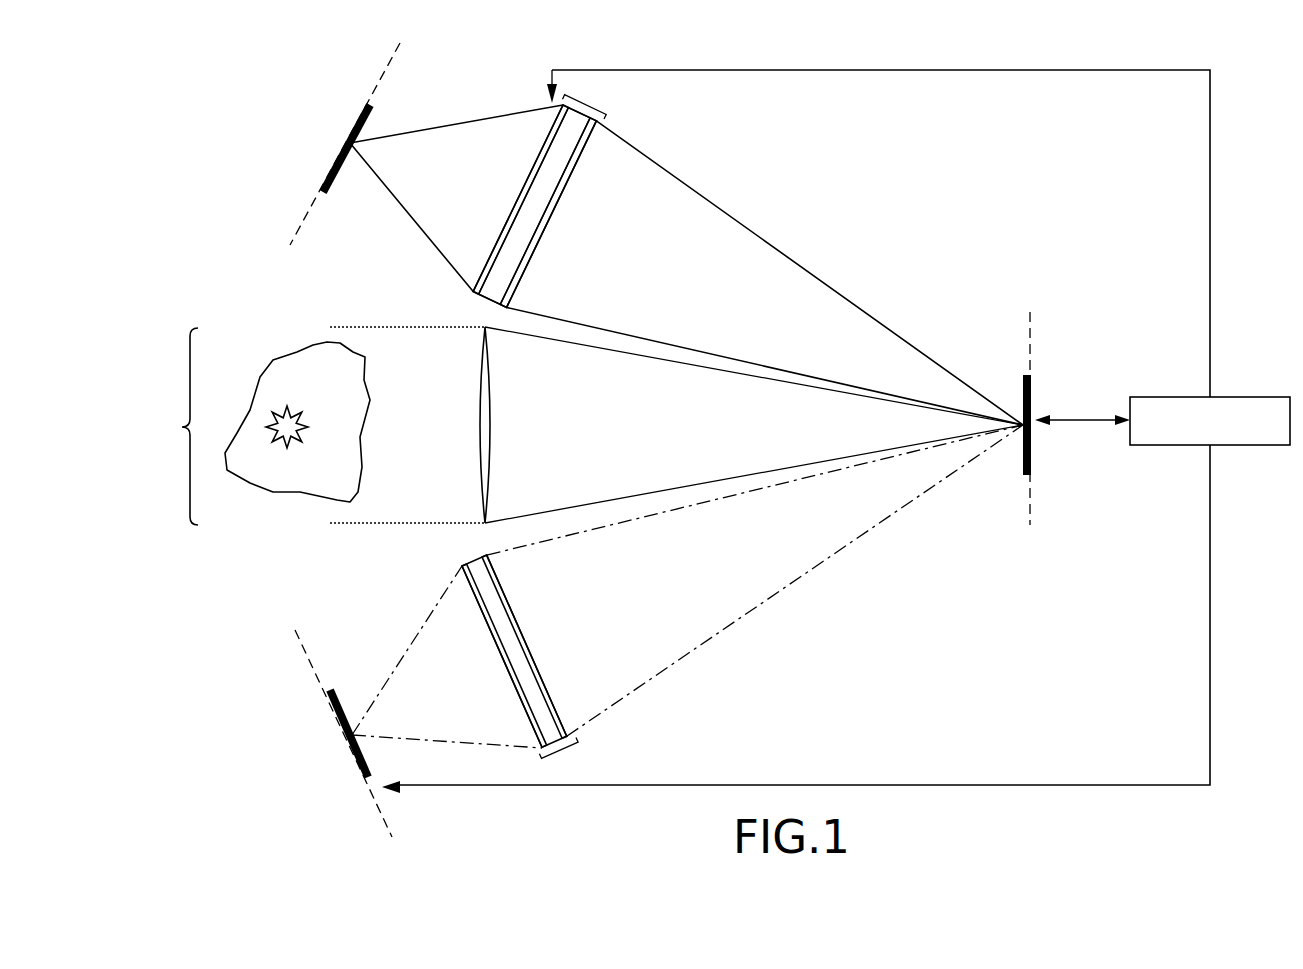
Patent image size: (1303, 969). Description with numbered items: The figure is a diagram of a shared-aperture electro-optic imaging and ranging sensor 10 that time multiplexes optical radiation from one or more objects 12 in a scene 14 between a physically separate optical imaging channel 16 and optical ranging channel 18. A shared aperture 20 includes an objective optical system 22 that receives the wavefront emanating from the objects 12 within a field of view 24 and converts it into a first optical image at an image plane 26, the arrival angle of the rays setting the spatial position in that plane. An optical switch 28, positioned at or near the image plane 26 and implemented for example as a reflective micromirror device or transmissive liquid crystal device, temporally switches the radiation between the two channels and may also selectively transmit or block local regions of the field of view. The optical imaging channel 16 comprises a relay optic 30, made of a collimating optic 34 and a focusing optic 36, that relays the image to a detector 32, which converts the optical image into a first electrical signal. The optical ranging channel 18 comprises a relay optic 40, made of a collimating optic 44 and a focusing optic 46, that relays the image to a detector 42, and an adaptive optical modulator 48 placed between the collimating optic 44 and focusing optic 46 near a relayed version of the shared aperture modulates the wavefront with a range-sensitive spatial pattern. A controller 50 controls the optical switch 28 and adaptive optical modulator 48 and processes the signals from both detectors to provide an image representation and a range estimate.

The shared-aperture electro-optic imaging and ranging sensor 10 is at (1052, 153).
The object 12 is at (277, 417).
The scene 14 is at (314, 483).
The optical imaging channel 16 is at (724, 672).
The optical ranging channel 18 is at (775, 216).
The shared aperture 20 is at (473, 523).
The objective optical system 22 is at (480, 422).
The field of view 24 is at (181, 427).
The image plane 26 is at (1032, 519).
The optical switch 28 is at (1034, 391).
The relay optic 30 is at (519, 671).
The detector 32 is at (342, 740).
The collimating optic 34 is at (530, 640).
The focusing optic 36 is at (498, 660).
The relay optic 40 is at (534, 189).
The detector 42 is at (345, 147).
The collimating optic 44 is at (563, 203).
The focusing optic 46 is at (517, 196).
The adaptive optical modulator 48 is at (527, 232).
The controller 50 is at (1245, 397).